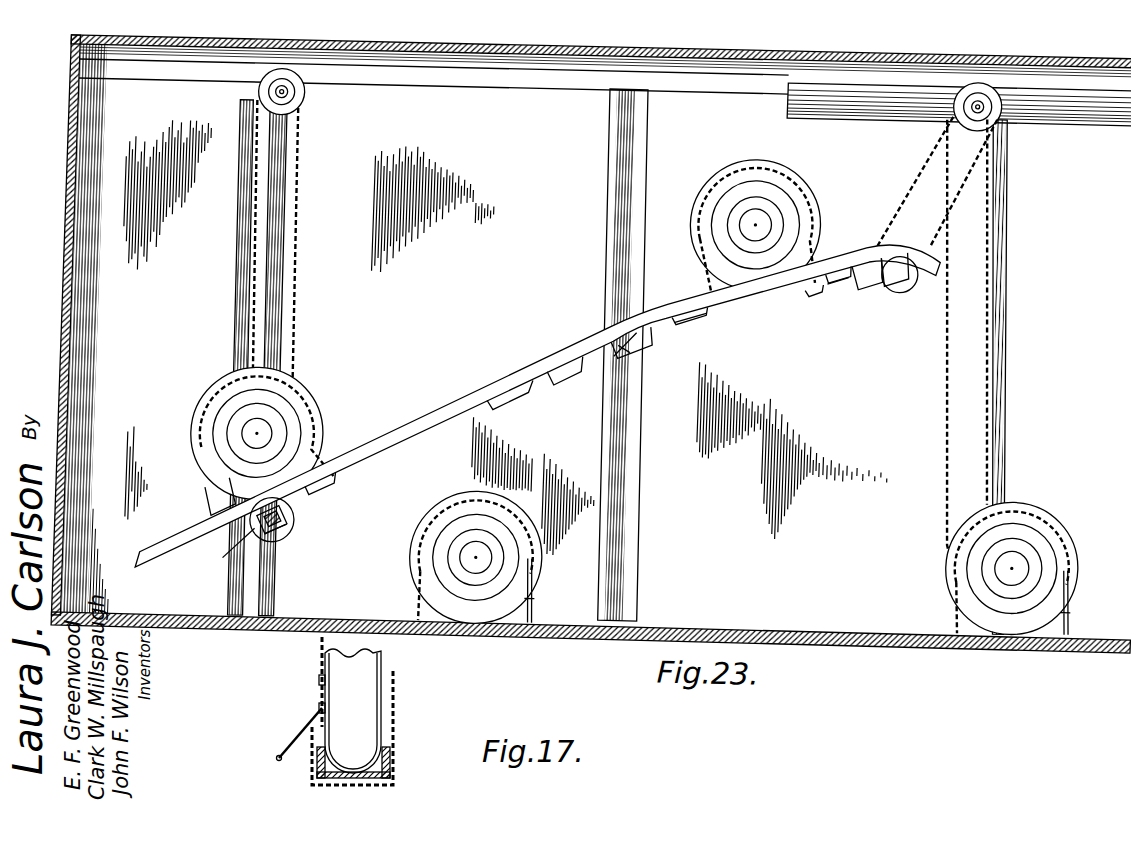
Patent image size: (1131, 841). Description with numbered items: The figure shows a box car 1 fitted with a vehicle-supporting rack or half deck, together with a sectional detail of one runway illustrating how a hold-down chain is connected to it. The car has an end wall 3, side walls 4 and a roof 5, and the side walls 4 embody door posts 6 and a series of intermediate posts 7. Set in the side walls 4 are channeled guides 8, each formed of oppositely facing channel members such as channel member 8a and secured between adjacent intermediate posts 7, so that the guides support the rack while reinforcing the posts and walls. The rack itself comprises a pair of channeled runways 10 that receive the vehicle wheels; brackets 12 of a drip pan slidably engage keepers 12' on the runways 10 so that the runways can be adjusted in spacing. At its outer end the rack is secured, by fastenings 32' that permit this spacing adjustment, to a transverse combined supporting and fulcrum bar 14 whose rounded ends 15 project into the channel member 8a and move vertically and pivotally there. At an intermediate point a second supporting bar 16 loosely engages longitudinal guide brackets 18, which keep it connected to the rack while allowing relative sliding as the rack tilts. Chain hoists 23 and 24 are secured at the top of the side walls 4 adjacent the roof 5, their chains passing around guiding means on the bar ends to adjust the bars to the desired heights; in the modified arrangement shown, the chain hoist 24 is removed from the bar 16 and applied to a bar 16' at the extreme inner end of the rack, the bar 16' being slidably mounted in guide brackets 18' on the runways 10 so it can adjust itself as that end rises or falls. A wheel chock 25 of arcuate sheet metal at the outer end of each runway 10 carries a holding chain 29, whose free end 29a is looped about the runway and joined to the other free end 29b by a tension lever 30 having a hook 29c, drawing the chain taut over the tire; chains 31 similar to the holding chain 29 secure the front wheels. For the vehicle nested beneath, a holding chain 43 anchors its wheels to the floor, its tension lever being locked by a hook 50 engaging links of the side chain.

In FIG. 23, the box car 1 is at (66, 232).
In FIG. 23, the end wall 3 is at (73, 367).
In FIG. 23, the side walls 4 is at (506, 340).
In FIG. 23, the roof 5 is at (472, 50).
In FIG. 23, the door posts 6 is at (1000, 199).
In FIG. 23, the intermediate posts 7 is at (237, 176).
In FIG. 23, the guides 8 is at (263, 176).
In FIG. 23, the channel member 8a is at (276, 212).
In FIG. 23, the runways 10 is at (538, 371).
In FIG. 23, the brackets 12 is at (762, 272).
In FIG. 23, the keepers 12' is at (760, 310).
In FIG. 23, the combined supporting and fulcrum bar 14 is at (296, 522).
In FIG. 23, the ends of bar 14 15 is at (239, 548).
In FIG. 23, the second supporting bar 16 is at (652, 349).
In FIG. 23, the bar 16' is at (895, 293).
In FIG. 23, the longitudinal guide brackets 18 is at (571, 383).
In FIG. 23, the guide brackets 18' is at (859, 295).
In FIG. 23, the chain hoist 23 is at (292, 104).
In FIG. 23, the chain hoist 24 is at (992, 110).
In FIG. 23, the wheel chock 25 is at (231, 509).
In FIG. 23, the holding chain 29 is at (307, 400).
In FIG. 17, the holding chain 29 is at (392, 668).
In FIG. 23, the free end of longitudinal chain member 29a is at (350, 481).
In FIG. 17, the free end of longitudinal chain member 29a is at (290, 783).
In FIG. 17, the free end of other longitudinal chain member 29b is at (319, 688).
In FIG. 17, the hook 29c is at (318, 708).
In FIG. 17, the tension lever 30 is at (285, 748).
In FIG. 23, the chains 31 is at (800, 202).
In FIG. 23, the fastenings 32' is at (304, 542).
In FIG. 23, the holding chain 43 is at (460, 503).
In FIG. 23, the hook 50 is at (541, 594).